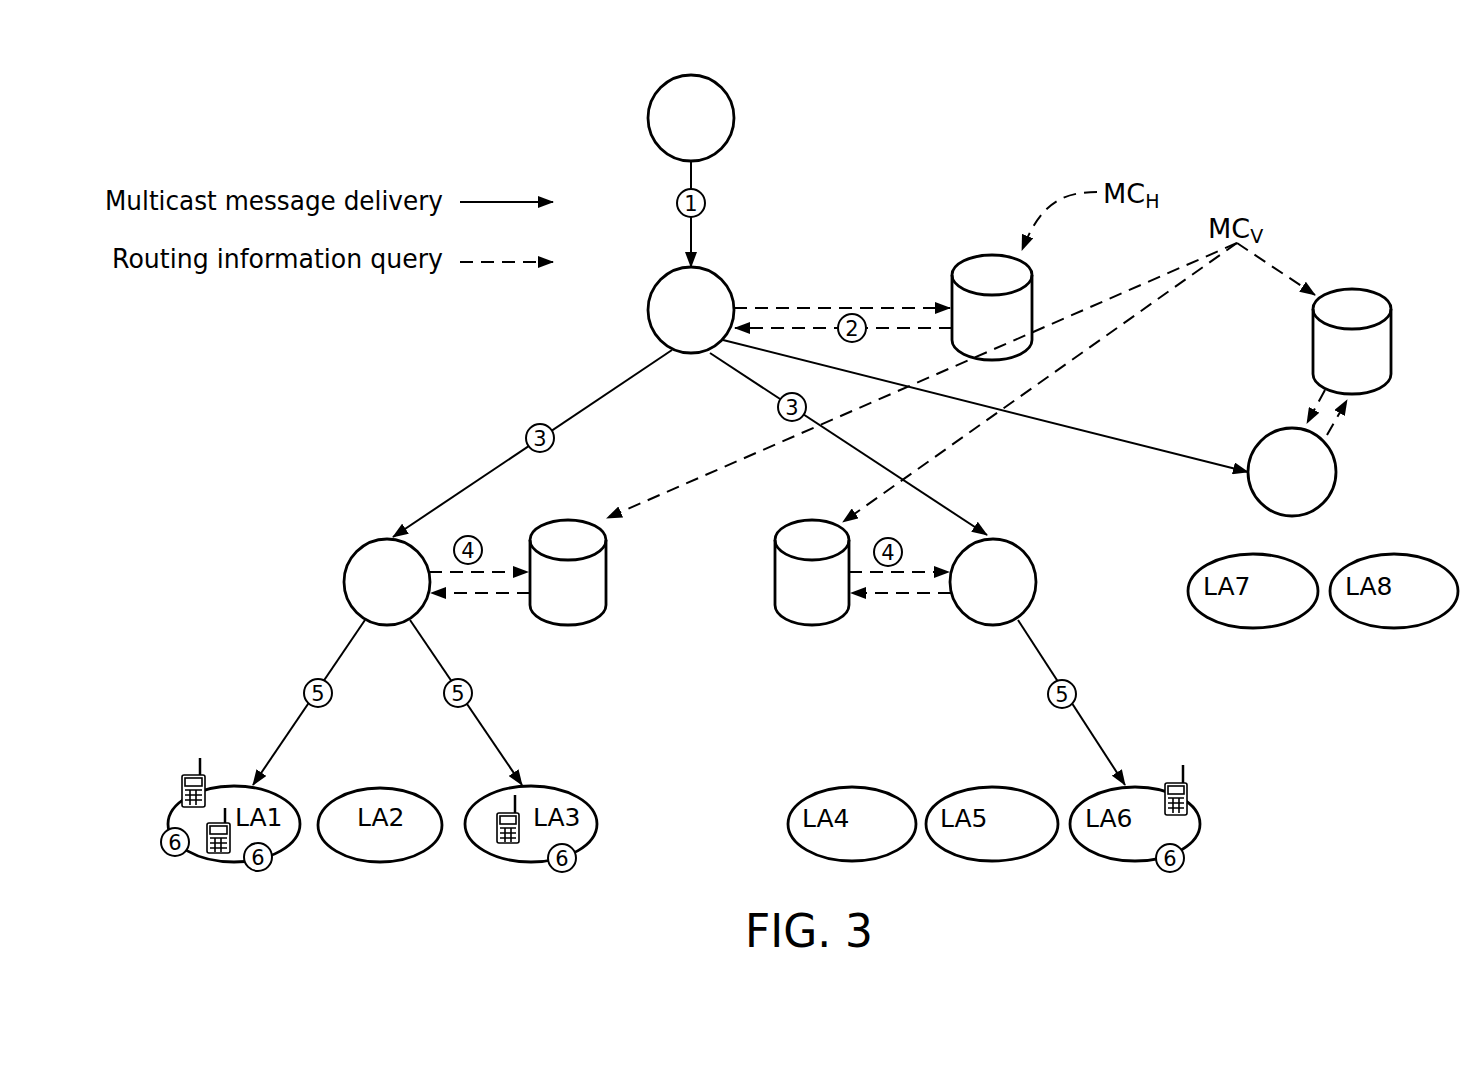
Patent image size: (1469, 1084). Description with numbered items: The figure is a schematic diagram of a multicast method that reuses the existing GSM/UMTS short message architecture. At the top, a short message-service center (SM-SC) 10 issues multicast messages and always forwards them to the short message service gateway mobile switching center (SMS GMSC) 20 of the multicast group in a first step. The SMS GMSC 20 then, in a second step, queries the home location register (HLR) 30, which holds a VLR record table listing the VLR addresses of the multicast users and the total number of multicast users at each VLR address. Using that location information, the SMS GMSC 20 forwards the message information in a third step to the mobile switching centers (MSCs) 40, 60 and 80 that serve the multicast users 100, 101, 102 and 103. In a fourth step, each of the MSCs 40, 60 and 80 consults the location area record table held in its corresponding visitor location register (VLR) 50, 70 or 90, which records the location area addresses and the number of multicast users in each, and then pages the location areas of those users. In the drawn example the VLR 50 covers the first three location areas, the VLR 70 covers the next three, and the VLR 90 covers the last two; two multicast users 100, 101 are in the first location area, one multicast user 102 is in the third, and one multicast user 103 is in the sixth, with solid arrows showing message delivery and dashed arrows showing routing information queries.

The short message-service center (SM-SC) 10 is at (735, 118).
The short message service gateway mobile switching center (SMS GMSC) 20 is at (712, 270).
The home location register (HLR) 30 is at (990, 256).
The mobile switching center (MSC) 40 is at (370, 542).
The visitor location register (VLR) 50 is at (570, 520).
The mobile switching center (MSC) 60 is at (1010, 545).
The visitor location register (VLR) 70 is at (810, 520).
The mobile switching center (MSC) 80 is at (1275, 432).
The visitor location register (VLR) 90 is at (1352, 290).
The multicast user 100 is at (192, 775).
The multicast user 101 is at (220, 855).
The multicast user 102 is at (515, 845).
The multicast user 103 is at (1190, 783).